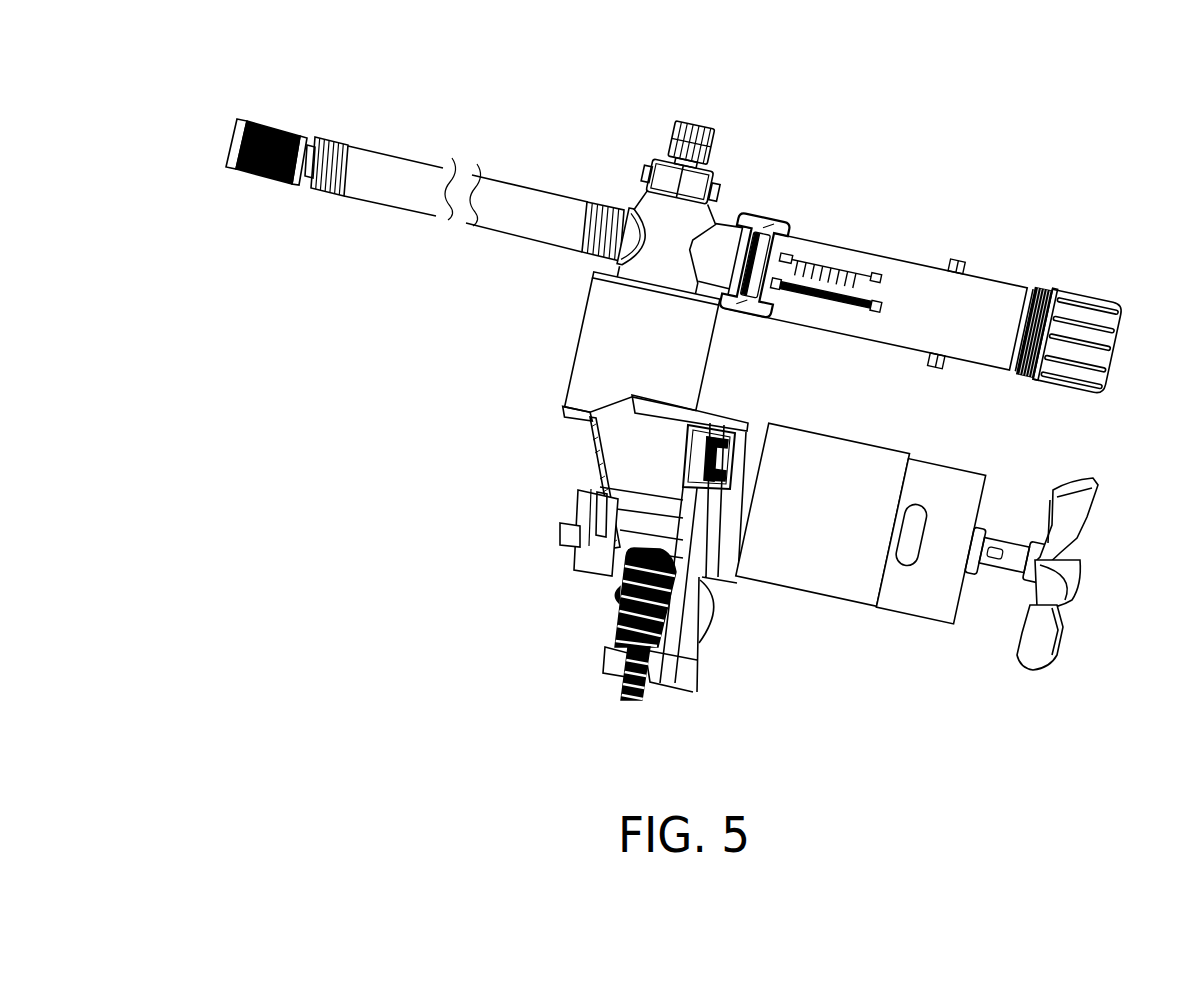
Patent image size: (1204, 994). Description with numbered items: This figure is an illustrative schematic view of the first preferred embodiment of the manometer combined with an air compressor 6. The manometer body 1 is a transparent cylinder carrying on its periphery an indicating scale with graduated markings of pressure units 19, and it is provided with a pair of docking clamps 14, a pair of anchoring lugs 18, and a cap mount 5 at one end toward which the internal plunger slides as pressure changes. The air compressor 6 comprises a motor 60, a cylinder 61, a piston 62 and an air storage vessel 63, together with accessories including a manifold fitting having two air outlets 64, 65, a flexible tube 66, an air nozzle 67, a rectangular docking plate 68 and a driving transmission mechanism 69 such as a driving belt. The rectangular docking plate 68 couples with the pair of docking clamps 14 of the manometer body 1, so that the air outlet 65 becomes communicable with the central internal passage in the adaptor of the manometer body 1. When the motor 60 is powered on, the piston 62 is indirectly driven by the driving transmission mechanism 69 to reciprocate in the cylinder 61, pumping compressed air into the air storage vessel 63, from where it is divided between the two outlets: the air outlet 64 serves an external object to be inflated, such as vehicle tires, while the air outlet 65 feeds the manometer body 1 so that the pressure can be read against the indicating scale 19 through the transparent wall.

The manometer body 1 is at (903, 290).
The cap mount 5 is at (1068, 378).
The air compressor 6 is at (620, 453).
The docking clamps 14 is at (765, 228).
The anchoring lugs 18 is at (958, 262).
The indicating scale with graduated markings of pressure units 19 is at (827, 297).
The motor 60 is at (837, 572).
The cylinder 61 is at (598, 363).
The piston 62 is at (595, 507).
The air storage vessel 63 is at (662, 218).
The air outlet 64 is at (630, 205).
The air outlet 65 is at (722, 255).
The flexible tube 66 is at (388, 188).
The air nozzle 67 is at (262, 172).
The rectangular docking plate 68 is at (742, 217).
The driving transmission mechanism 69 is at (613, 636).